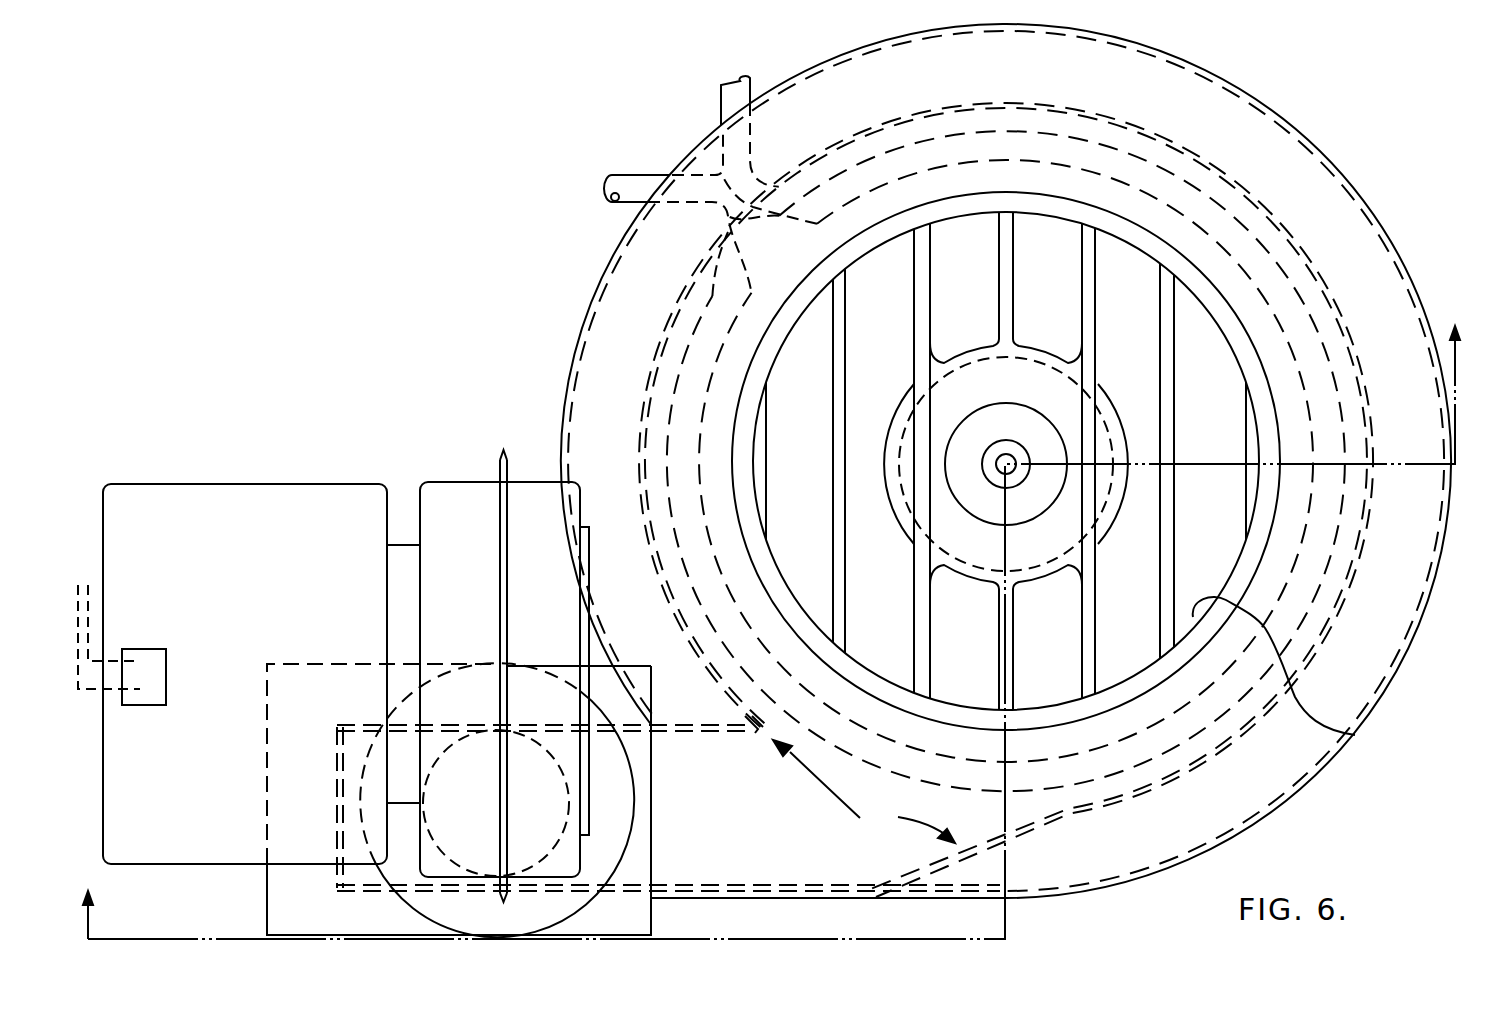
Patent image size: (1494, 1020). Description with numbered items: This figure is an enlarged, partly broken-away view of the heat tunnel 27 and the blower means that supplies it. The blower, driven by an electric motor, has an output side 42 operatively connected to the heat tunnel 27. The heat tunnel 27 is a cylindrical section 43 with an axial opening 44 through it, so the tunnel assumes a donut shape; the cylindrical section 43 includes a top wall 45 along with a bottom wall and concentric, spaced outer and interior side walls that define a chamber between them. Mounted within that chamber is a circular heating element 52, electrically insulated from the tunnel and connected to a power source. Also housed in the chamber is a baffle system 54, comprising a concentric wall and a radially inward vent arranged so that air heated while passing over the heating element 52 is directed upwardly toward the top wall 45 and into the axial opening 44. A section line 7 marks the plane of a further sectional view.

The section line 7- 7 is at (771, 615).
The heat tunnel 27 is at (785, 878).
The output side 42 is at (571, 779).
The cylindrical section 43 is at (1285, 773).
The axial opening 44 is at (1355, 735).
The top wall 45 is at (1392, 623).
The heating element 52 is at (614, 180).
The baffle system 54 is at (864, 791).